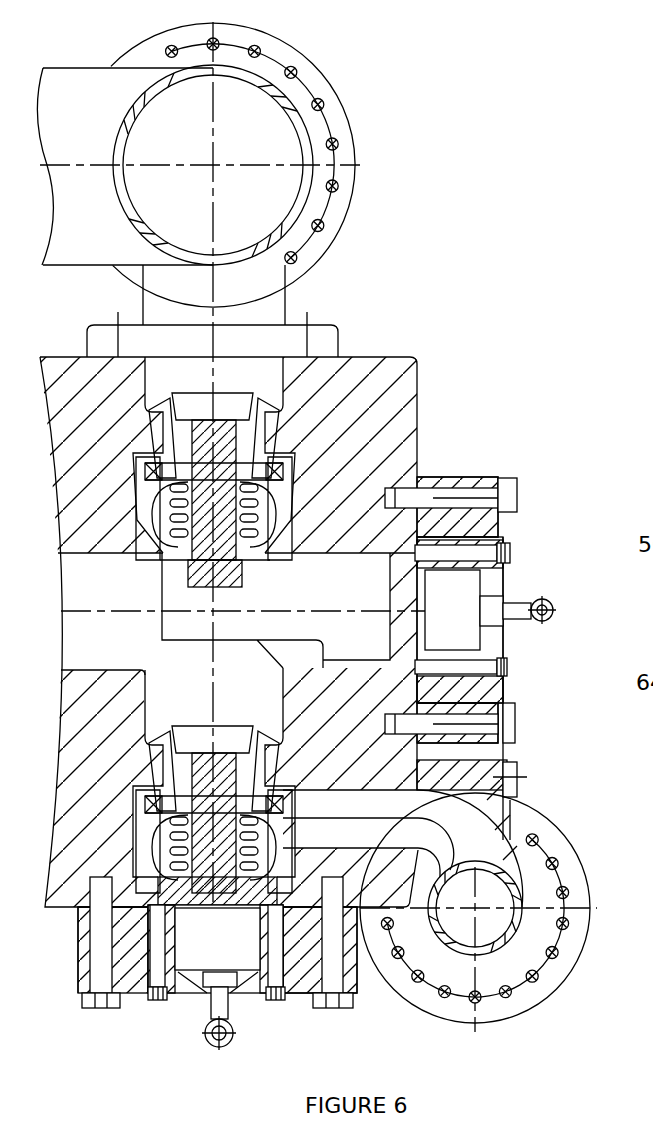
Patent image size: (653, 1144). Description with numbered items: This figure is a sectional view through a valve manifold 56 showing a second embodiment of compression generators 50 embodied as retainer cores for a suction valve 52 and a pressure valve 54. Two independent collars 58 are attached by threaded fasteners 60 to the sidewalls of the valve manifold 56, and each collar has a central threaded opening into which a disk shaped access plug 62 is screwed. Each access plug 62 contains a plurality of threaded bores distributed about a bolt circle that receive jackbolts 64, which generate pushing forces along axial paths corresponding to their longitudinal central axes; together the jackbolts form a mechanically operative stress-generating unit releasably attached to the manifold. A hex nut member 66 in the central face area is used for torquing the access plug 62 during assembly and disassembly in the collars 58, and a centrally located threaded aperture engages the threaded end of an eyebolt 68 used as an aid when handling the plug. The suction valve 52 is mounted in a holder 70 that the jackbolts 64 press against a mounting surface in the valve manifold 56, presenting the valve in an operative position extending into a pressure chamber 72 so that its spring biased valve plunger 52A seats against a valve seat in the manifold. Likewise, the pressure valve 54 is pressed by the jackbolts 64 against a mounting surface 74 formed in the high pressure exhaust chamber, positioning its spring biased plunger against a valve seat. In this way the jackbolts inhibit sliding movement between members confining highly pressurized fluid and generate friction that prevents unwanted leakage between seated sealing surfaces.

The compression generator 50 is at (432, 472).
The suction valve 52 is at (250, 390).
The spring biased valve plunger 52A is at (158, 557).
The pressure valve 54 is at (172, 722).
The valve manifold 56 is at (385, 357).
The collar 58 is at (487, 476).
The threaded fastener 60 is at (513, 484).
The access plug 62 is at (483, 592).
The jackbolt 64 is at (507, 546).
The hex nut member 66 is at (510, 624).
The eyebolt 68 is at (554, 599).
The holder 70 is at (298, 565).
The pressure chamber 72 is at (119, 644).
The mounting surface 74 is at (157, 870).